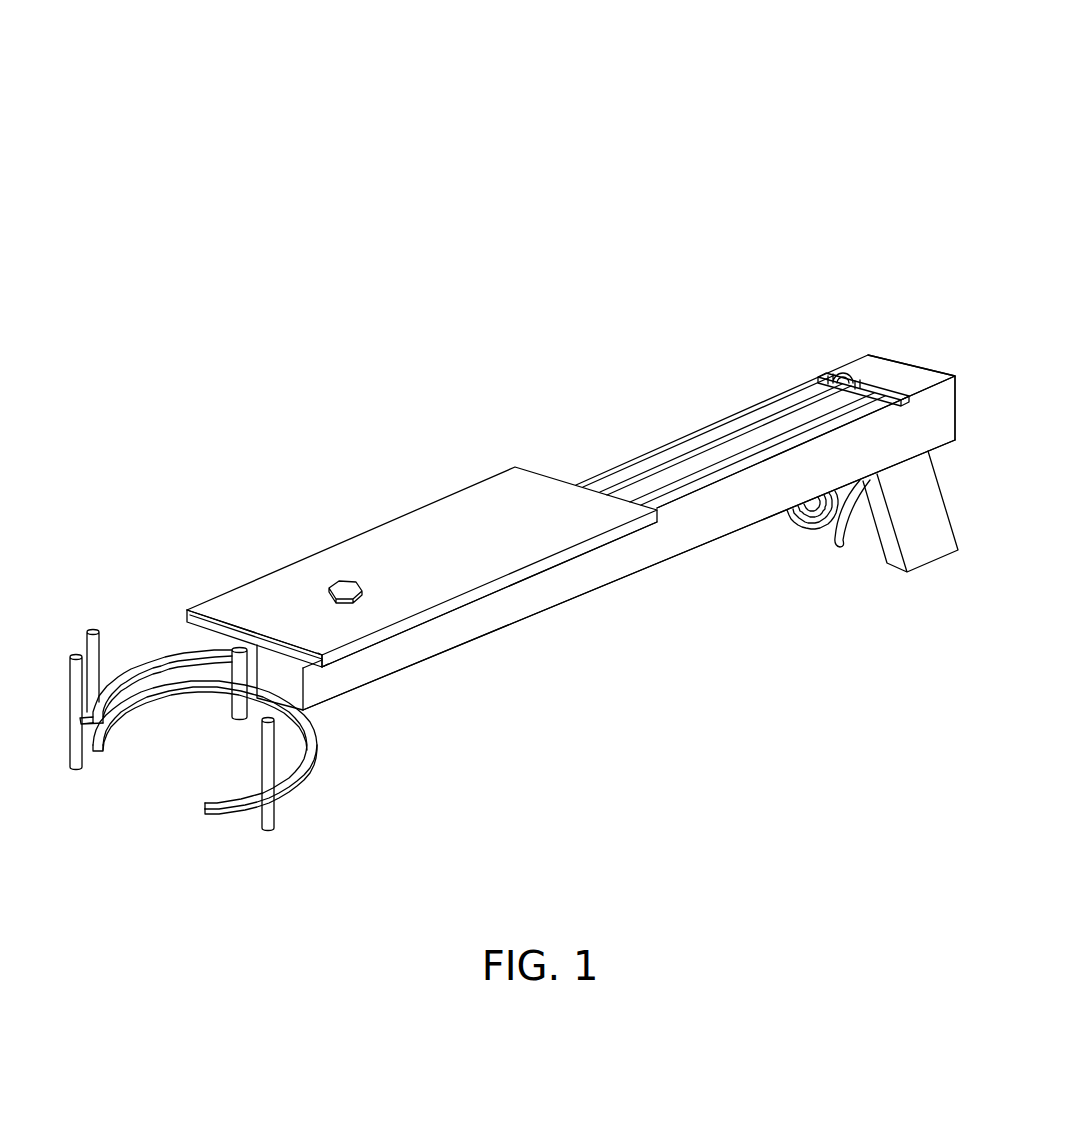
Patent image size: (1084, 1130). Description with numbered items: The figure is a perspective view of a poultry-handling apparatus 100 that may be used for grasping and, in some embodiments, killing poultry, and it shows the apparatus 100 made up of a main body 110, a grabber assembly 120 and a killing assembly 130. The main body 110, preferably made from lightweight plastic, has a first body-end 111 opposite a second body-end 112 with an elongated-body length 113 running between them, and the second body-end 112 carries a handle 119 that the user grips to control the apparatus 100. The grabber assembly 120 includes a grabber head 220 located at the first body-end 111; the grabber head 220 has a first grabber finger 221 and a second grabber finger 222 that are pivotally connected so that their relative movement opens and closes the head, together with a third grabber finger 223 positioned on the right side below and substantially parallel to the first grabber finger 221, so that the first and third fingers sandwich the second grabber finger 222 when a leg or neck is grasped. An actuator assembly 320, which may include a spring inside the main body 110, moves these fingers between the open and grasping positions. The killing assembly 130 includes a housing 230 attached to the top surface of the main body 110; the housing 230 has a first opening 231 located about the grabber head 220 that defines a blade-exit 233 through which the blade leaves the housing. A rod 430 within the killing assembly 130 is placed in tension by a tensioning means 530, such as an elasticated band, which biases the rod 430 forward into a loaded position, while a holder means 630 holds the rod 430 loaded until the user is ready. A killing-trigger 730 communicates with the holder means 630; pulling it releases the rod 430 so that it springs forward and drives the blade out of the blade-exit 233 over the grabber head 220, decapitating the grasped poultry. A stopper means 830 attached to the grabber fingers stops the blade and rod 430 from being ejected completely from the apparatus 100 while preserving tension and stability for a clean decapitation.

The apparatus 100 is at (768, 58).
The grabber assembly 120 is at (792, 95).
The killing assembly 130 is at (818, 133).
The main body 110 is at (675, 557).
The first body-end 111 is at (335, 700).
The second body-end 112 is at (915, 375).
The elongated-body length 113 is at (565, 598).
The handle 119 is at (933, 538).
The housing 230 is at (401, 535).
The first opening 231 is at (207, 617).
The blade-exit 233 is at (325, 660).
The grabber head 220 is at (302, 777).
The first grabber finger 221 is at (238, 808).
The second grabber finger 222 is at (132, 697).
The third grabber finger 223 is at (157, 652).
The stopper means 830 is at (73, 635).
The rod 430 is at (688, 462).
The tensioning means 530 is at (790, 390).
The holder means 630 is at (840, 368).
The killing-trigger 730 is at (820, 517).
The actuator assembly 320 is at (855, 532).